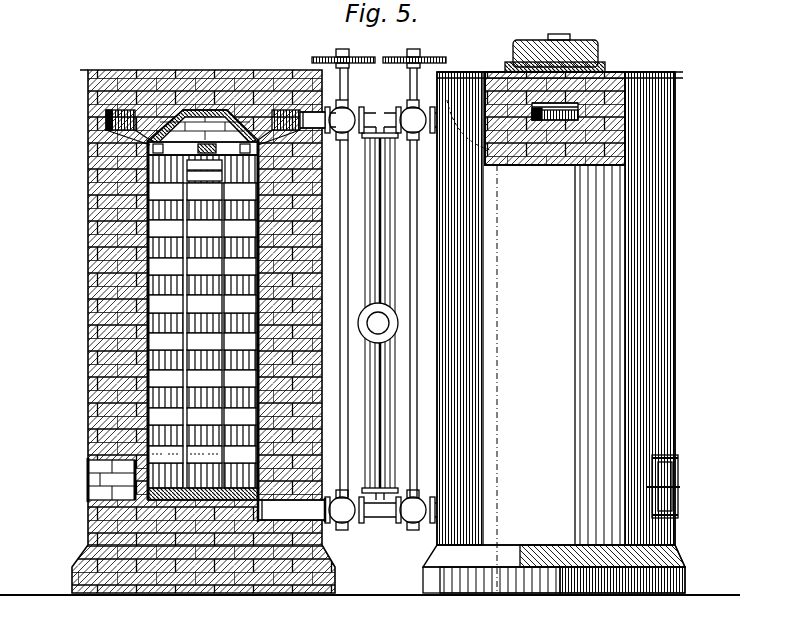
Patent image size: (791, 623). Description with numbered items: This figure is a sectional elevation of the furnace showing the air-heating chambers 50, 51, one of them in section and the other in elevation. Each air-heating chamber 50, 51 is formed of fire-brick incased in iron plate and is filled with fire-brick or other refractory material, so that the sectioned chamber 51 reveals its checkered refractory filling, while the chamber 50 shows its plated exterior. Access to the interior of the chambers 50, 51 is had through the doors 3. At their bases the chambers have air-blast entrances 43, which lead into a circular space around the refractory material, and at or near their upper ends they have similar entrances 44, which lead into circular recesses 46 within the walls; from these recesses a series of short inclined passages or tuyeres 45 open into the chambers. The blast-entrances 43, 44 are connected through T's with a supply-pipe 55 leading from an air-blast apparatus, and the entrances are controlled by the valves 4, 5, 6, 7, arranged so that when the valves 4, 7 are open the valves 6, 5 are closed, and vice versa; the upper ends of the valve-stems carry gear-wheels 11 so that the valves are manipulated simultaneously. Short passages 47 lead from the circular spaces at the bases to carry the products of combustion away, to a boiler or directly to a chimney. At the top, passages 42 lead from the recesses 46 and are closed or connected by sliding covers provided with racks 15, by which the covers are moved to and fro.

The door 3 is at (88, 485).
The valve 4 is at (410, 282).
The valve 5 is at (416, 510).
The valve 6 is at (350, 282).
The valve 7 is at (360, 510).
The gear-wheel 11 is at (379, 53).
The rack 15 is at (560, 39).
The passage 42 is at (540, 112).
The air-blast entrance 43 is at (431, 273).
The air-blast entrance 44 is at (395, 118).
The inclined passage or tuyere 45 is at (227, 148).
The recess 46 is at (106, 120).
The short passage 47 is at (236, 461).
The air-heating chamber 50 is at (554, 332).
The air-heating chamber 51 is at (203, 305).
The supply-pipe 55 is at (378, 313).